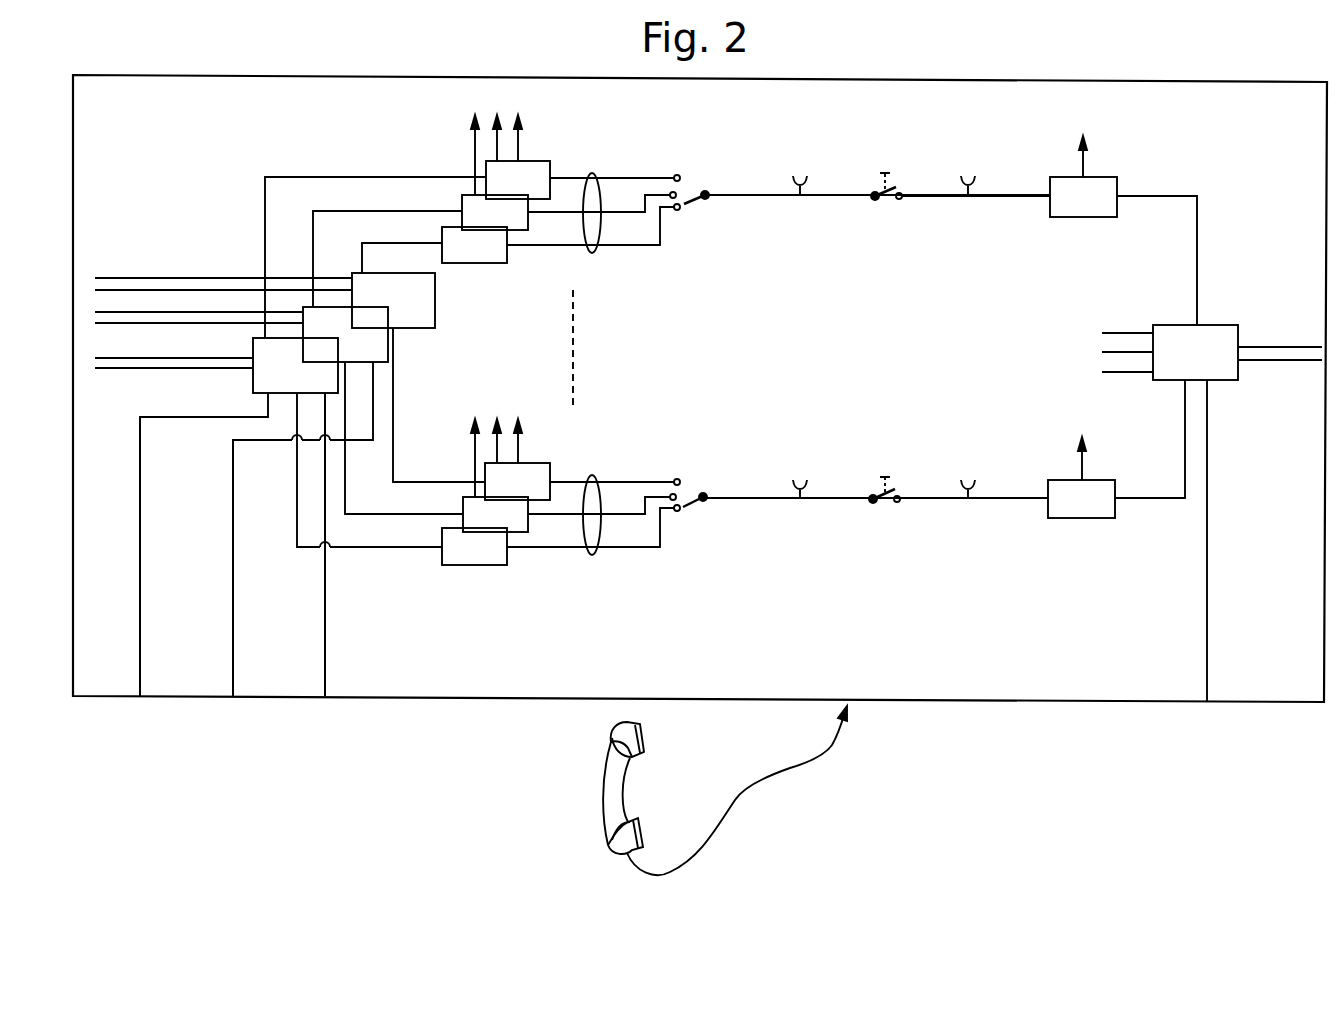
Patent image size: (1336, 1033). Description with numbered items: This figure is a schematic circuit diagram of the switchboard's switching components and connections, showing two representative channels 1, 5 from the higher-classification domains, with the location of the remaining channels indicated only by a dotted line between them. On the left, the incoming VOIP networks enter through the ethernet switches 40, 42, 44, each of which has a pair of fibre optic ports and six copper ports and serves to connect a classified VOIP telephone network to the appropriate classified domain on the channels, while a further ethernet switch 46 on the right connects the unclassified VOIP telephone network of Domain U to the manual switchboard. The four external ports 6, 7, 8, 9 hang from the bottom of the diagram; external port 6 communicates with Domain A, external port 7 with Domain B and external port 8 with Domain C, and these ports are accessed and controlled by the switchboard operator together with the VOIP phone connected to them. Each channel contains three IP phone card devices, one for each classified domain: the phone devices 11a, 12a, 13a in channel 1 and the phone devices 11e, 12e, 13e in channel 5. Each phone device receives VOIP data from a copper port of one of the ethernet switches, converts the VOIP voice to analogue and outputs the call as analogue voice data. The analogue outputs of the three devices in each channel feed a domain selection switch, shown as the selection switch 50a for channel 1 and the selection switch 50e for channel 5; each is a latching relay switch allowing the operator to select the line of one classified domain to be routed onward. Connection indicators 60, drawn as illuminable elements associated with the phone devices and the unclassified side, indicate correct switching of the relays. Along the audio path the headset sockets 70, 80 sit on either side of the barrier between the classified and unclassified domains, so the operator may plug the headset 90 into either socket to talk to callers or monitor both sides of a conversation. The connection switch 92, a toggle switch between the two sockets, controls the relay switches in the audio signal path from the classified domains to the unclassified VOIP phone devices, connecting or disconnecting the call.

The channel 1 is at (593, 173).
The channel 5 is at (592, 560).
The external port 6 is at (140, 572).
The external port 7 is at (232, 584).
The external port 8 is at (323, 560).
The external port 9 is at (1205, 556).
The phone device 11a is at (537, 172).
The phone device 12a is at (488, 208).
The phone device 13a is at (475, 253).
The phone device 11e is at (472, 552).
The phone device 12e is at (497, 510).
The phone device 13e is at (523, 477).
The ethernet switch 40 is at (280, 373).
The ethernet switch 42 is at (368, 345).
The ethernet switch 44 is at (415, 322).
The ethernet switch 46 is at (1218, 340).
The domain selection switch 50a is at (702, 203).
The domain selection switch 50e is at (702, 505).
The connection indicator 60 is at (518, 150).
The headset socket 70 is at (800, 180).
The headset socket 80 is at (968, 182).
The headset 90 is at (608, 790).
The connection switch 92 is at (888, 215).